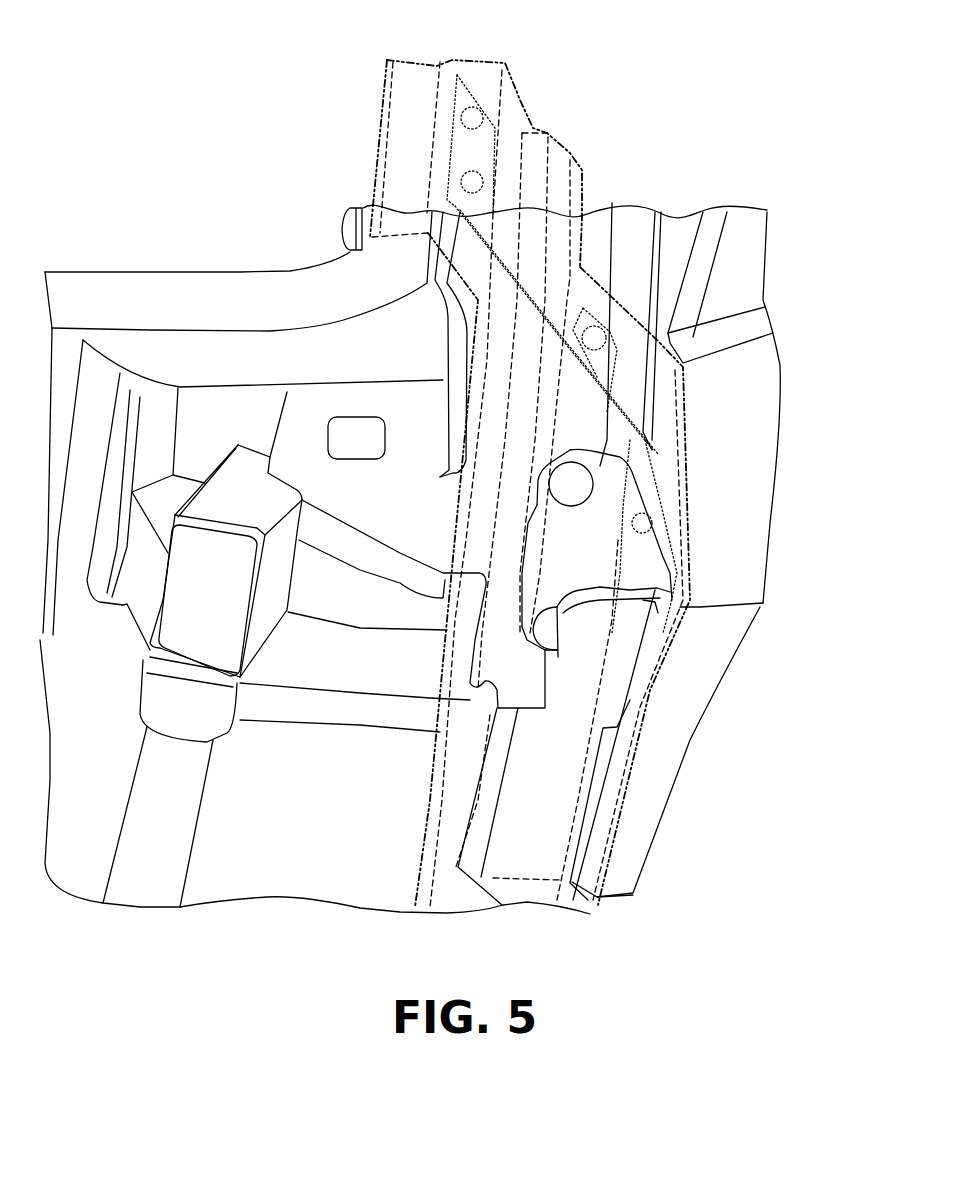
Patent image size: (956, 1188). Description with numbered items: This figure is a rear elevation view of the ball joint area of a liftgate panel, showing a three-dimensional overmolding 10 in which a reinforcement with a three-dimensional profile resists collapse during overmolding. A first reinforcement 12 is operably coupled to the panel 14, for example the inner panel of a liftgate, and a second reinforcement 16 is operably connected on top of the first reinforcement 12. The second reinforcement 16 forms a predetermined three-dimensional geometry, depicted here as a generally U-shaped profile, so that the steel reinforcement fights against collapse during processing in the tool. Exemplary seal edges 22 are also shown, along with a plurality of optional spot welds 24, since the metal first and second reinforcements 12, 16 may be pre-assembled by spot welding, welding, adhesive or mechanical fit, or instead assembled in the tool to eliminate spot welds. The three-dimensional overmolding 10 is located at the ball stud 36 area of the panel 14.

The 3D overmolding 10 is at (348, 183).
The first reinforcement 12 is at (548, 193).
The panel 14 is at (743, 252).
The second reinforcement 16 is at (472, 88).
The seal edges 22 is at (720, 447).
The spot welds 24 is at (596, 337).
The ball stud 36 is at (640, 607).